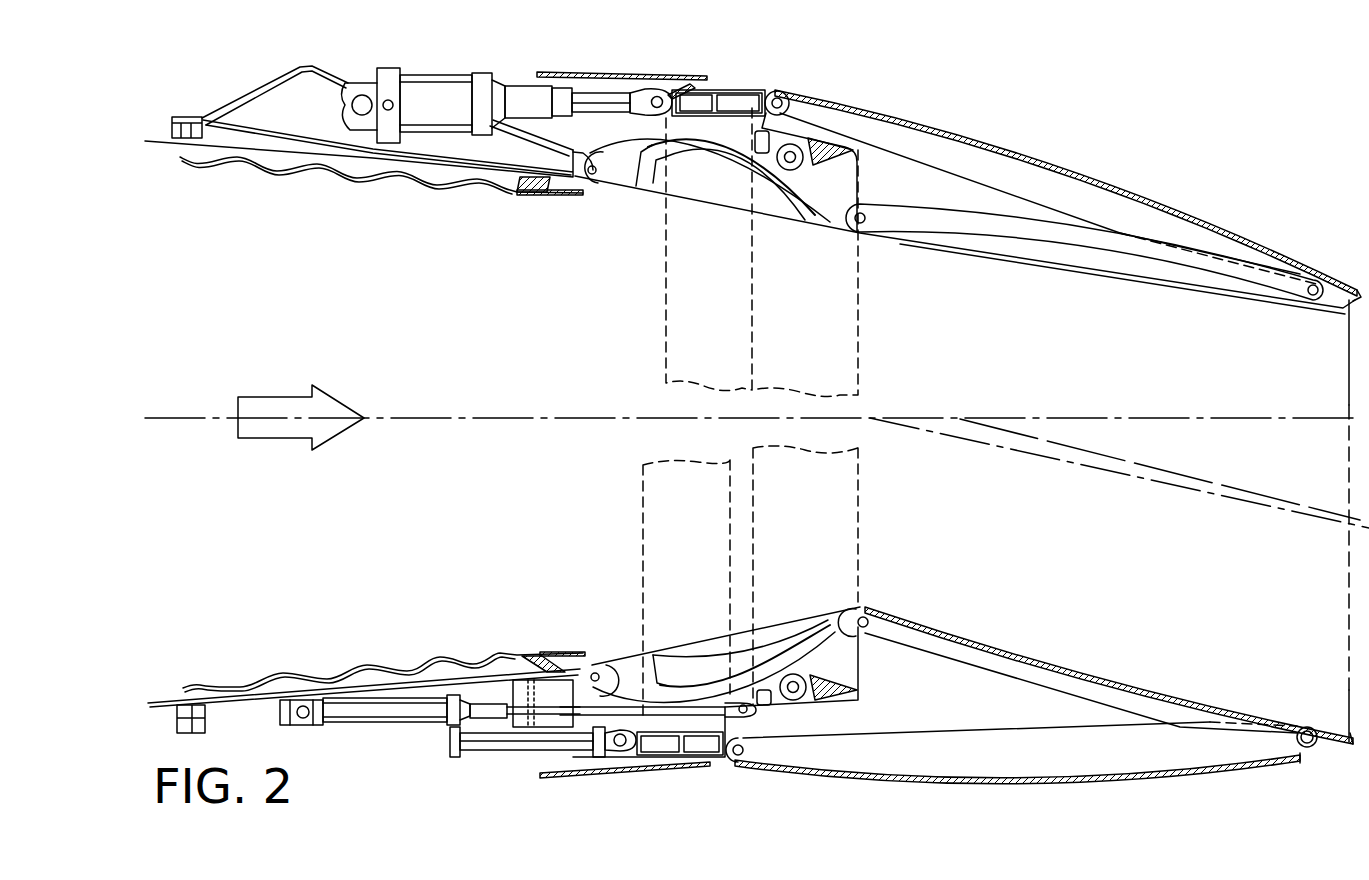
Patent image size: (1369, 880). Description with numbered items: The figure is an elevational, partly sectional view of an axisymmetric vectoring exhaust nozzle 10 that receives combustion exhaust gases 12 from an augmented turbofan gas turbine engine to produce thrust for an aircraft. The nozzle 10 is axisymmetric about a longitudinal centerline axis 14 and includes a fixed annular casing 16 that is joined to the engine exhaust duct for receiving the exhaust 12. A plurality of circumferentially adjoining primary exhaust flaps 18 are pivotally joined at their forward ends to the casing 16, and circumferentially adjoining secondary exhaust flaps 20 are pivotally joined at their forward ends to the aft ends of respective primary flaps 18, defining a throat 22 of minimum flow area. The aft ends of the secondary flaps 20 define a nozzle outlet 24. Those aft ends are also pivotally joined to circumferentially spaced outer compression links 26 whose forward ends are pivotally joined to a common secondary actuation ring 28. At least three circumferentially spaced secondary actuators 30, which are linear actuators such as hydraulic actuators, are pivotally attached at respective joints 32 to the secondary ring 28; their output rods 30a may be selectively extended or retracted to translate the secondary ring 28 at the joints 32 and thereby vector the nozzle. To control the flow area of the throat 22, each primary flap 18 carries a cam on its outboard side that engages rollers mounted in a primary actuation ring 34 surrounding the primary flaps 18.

The axisymmetric vectoring exhaust nozzle 10 is at (1200, 105).
The combustion exhaust gases 12 is at (273, 440).
The centerline axis 14 is at (463, 418).
The annular casing 16 is at (157, 140).
The primary exhaust flaps 18 is at (643, 188).
The secondary exhaust flaps 20 is at (1203, 287).
The throat 22 is at (860, 313).
The nozzle outlet 24 is at (1348, 460).
The outer compression links 26 is at (1023, 173).
The secondary actuation ring 28 is at (730, 88).
The secondary actuators 30 is at (425, 80).
The output rods 30a is at (597, 92).
The joints 32 is at (657, 92).
The primary actuation ring 34 is at (862, 668).